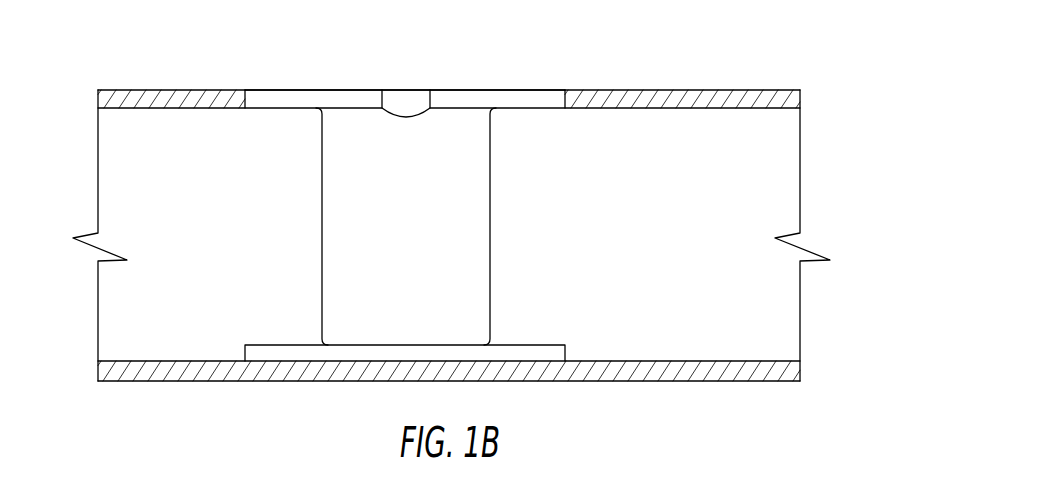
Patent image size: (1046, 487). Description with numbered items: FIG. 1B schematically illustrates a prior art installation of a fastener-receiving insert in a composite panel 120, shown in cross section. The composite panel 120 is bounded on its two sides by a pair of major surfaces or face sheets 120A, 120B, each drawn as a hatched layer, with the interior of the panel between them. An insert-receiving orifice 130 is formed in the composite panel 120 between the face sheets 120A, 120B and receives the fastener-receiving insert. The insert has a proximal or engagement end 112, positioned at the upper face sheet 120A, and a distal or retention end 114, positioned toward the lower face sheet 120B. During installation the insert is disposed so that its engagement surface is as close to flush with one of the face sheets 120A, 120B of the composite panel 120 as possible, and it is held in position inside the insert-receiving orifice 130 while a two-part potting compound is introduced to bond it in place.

The composite panel 120 is at (848, 61).
The face sheet 120A is at (725, 90).
The face sheet 120B is at (726, 382).
The engagement end 112 is at (567, 90).
The retention end 114 is at (568, 353).
The insert-receiving orifice 130 is at (558, 153).